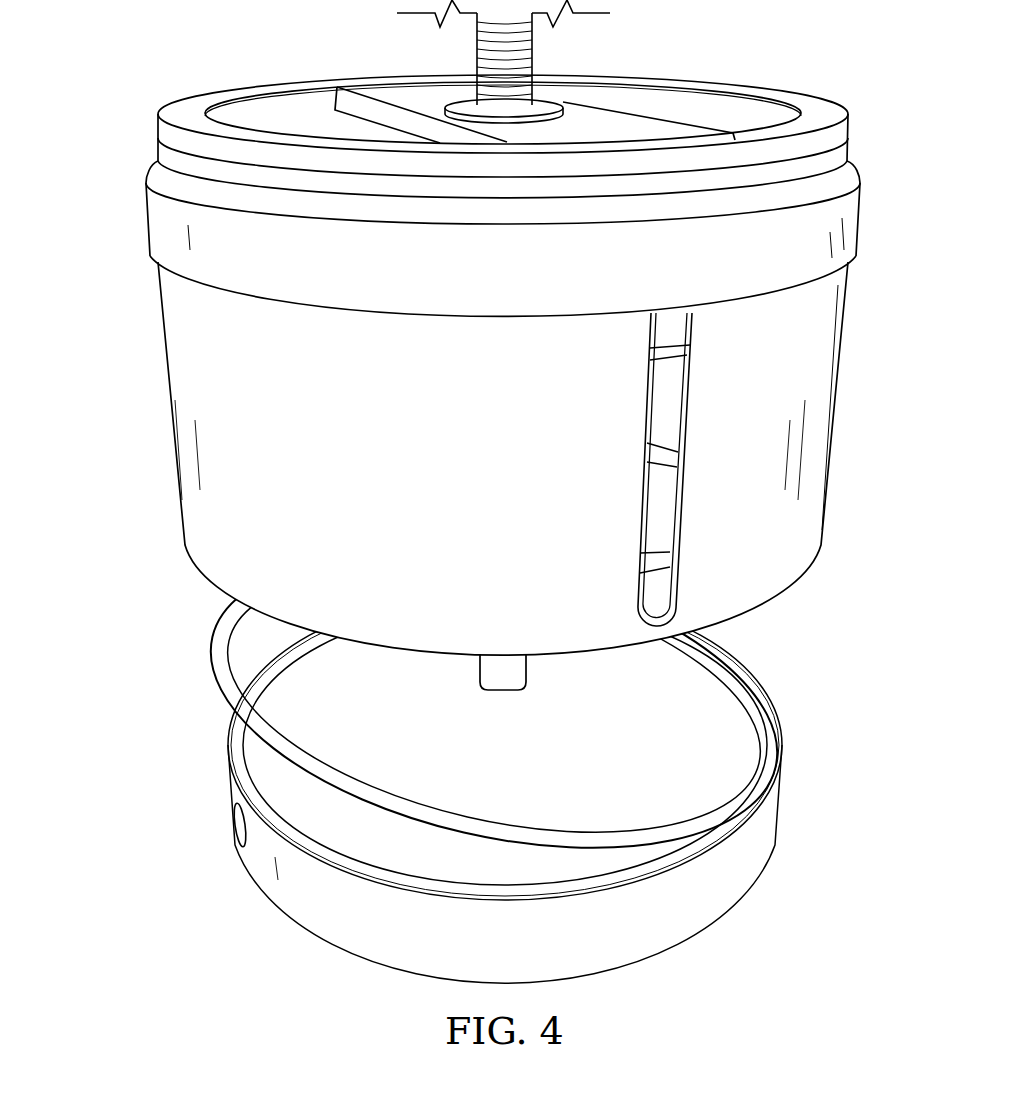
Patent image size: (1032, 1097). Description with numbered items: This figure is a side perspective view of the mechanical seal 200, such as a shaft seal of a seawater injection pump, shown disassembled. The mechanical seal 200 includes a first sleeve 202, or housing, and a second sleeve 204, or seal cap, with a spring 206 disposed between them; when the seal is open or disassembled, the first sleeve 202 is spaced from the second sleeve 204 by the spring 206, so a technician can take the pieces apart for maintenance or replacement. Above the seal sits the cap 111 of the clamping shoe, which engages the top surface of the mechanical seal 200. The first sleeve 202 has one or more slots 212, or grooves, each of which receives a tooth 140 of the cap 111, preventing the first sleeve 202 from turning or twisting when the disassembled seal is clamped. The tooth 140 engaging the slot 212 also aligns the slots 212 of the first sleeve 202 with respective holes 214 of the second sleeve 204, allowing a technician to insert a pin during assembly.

The mechanical seal 200 is at (103, 321).
The cap 111 is at (862, 208).
The tooth 140 is at (680, 329).
The first sleeve 202 is at (838, 386).
The second sleeve 204 is at (680, 940).
The spring 206 is at (518, 813).
The slot 212 is at (655, 390).
The hole 214 is at (234, 838).